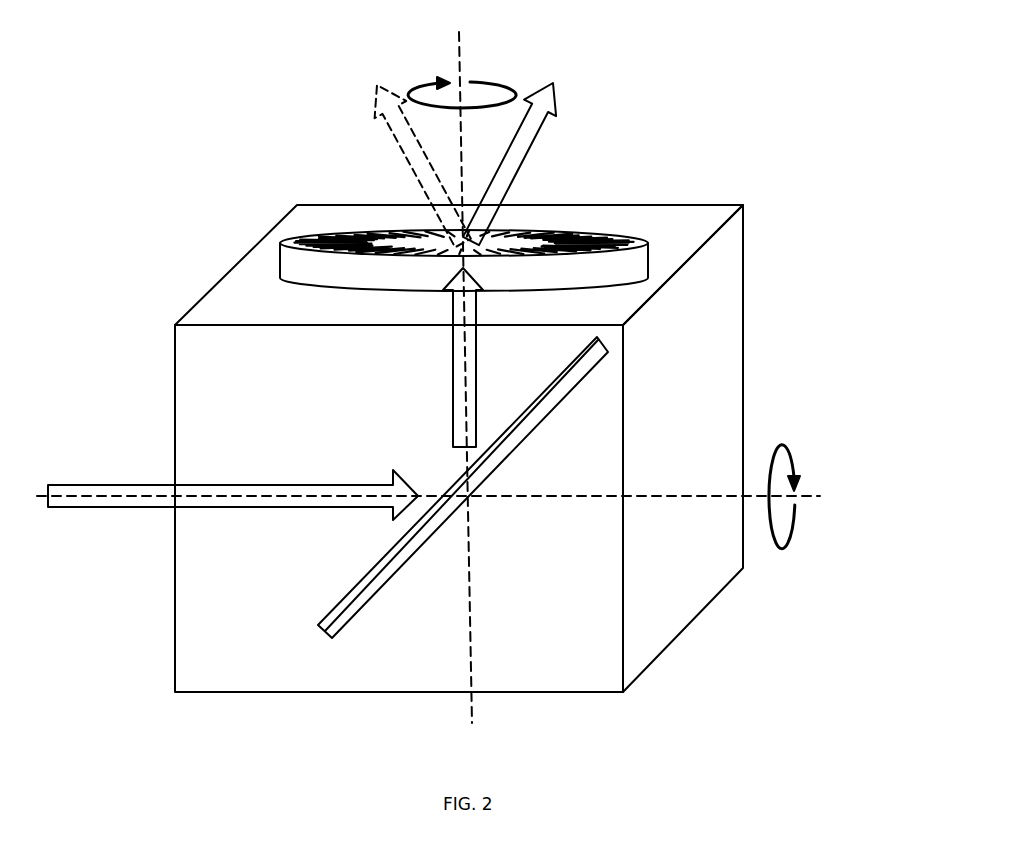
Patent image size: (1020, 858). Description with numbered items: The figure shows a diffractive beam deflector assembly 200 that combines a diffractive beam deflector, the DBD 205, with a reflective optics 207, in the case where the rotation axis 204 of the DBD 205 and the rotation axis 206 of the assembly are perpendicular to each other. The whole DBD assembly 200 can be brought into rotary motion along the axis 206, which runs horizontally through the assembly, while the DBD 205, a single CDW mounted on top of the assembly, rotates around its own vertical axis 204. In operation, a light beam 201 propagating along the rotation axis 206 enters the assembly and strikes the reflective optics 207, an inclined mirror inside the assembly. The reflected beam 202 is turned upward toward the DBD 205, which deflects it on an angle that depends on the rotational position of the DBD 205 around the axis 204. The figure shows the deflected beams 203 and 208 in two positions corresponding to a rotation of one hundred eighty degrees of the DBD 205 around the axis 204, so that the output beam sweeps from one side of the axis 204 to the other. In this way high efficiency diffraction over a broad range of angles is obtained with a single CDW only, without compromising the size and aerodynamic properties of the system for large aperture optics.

The DBD assembly 200 is at (657, 638).
The light beam 201 is at (57, 488).
The reflected beam 202 is at (452, 382).
The deflected beam 203 is at (398, 148).
The rotation axis of the DBD 204 is at (457, 53).
The DBD 205 is at (573, 242).
The rotation axis of the assembly 206 is at (822, 498).
The reflective optics 207 is at (355, 590).
The deflected beam 208 is at (560, 110).